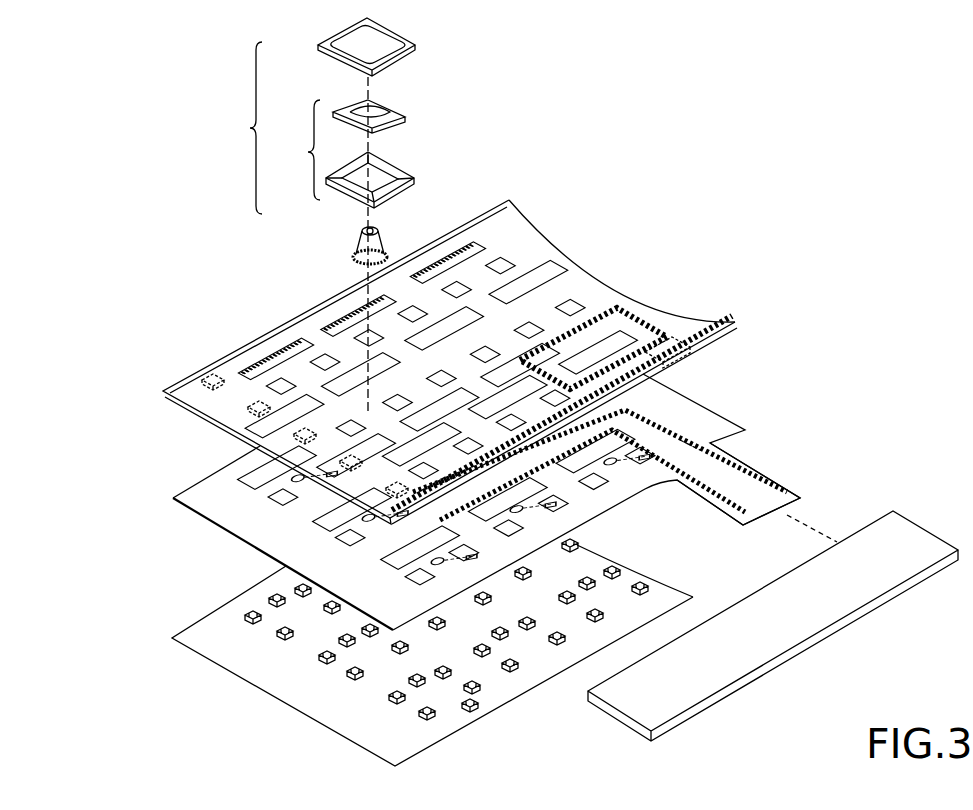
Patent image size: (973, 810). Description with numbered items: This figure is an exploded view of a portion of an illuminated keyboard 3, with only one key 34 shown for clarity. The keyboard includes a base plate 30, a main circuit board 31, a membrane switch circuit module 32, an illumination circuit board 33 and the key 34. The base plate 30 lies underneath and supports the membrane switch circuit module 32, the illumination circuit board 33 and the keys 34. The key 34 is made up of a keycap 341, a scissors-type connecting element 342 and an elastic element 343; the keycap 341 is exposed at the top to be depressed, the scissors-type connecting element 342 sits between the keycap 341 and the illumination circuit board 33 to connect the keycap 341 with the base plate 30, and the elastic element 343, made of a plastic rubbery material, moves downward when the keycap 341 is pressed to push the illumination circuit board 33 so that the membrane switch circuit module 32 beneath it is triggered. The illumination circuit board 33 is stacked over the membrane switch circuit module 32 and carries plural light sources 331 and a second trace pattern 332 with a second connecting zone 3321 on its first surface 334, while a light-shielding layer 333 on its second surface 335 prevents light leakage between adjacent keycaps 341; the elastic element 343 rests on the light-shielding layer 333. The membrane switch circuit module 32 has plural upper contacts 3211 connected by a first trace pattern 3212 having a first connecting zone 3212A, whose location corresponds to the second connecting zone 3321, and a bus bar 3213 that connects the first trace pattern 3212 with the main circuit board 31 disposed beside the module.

The illuminated keyboard 3 is at (572, 50).
The base plate 30 is at (303, 697).
The main circuit board 31 is at (780, 642).
The membrane switch circuit module 32 is at (491, 489).
The upper contacts 3211 is at (277, 492).
The first trace pattern 3212 is at (650, 420).
The first connecting zone 3212A is at (687, 447).
The bus bar 3213 is at (743, 480).
The illumination circuit board 33 is at (447, 362).
The light sources 331 is at (222, 376).
The second trace pattern 332 is at (630, 318).
The second connecting zone 3321 is at (693, 340).
The light-shielding layer 333 is at (320, 335).
The first surface 334 is at (190, 407).
The second surface 335 is at (343, 302).
The key 34 is at (319, 215).
The keycap 341 is at (352, 37).
The scissors-type connecting element 342 is at (341, 154).
The elastic element 343 is at (358, 245).